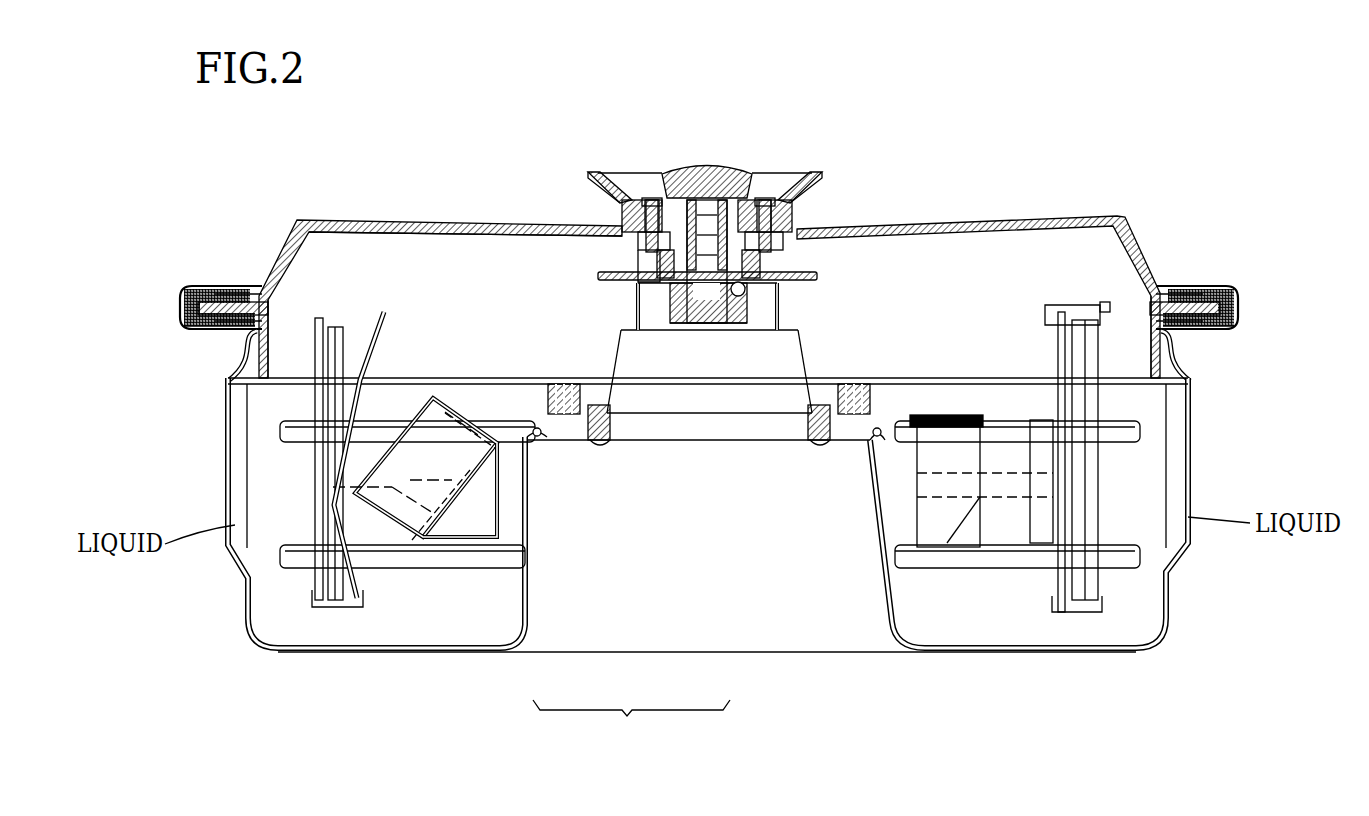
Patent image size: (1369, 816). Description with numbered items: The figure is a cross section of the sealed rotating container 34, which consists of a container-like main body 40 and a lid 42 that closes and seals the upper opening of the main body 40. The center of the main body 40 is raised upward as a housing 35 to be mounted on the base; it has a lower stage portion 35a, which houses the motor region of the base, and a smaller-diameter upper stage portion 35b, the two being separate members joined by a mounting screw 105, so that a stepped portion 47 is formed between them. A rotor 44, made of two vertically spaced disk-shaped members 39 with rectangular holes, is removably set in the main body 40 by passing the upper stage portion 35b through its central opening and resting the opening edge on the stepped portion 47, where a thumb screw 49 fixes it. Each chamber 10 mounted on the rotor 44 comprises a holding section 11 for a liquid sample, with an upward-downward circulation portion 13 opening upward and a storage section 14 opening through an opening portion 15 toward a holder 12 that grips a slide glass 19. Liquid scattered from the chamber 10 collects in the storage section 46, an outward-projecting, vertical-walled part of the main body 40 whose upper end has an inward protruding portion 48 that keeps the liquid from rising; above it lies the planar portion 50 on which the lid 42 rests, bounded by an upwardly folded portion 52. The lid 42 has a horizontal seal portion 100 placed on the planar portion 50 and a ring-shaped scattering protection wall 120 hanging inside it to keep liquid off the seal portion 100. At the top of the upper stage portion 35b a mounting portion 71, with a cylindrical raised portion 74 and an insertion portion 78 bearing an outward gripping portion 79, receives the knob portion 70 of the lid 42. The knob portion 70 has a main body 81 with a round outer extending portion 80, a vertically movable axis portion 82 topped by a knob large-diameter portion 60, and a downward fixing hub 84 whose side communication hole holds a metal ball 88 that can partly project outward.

The chamber 10 is at (392, 362).
The holding section 11 is at (445, 400).
The holder 12 is at (1077, 580).
The upward-downward circulation portion 13 is at (447, 467).
The storage section 14 is at (398, 520).
The opening portion 15 is at (345, 510).
The slide glass 19 is at (327, 592).
The sealed rotating container 34 is at (968, 172).
The housing 35 is at (631, 731).
The lower stage portion 35a is at (520, 537).
The upper stage portion 35b is at (623, 350).
The disk-shaped member 39 is at (278, 430).
The main body 40 is at (1163, 633).
The lid 42 is at (1092, 217).
The rotor 44 is at (545, 380).
The storage section 46 is at (228, 490).
The stepped portion 47 is at (540, 440).
The protruding portion 48 is at (247, 350).
The thumb screw 49 is at (570, 385).
The planar portion 50 is at (192, 329).
The folded portion 52 is at (182, 300).
The knob large-diameter portion 60 is at (704, 172).
The knob portion 70 is at (648, 165).
The mounting portion 71 is at (602, 248).
The cylindrical raised portion 74 is at (778, 304).
The insertion portion 78 is at (645, 303).
The gripping portion 79 is at (806, 276).
The outer extending portion 80 is at (818, 172).
The main body 81 is at (772, 210).
The axis portion 82 is at (707, 322).
The fixing hub 84 is at (676, 315).
The metal ball 88 is at (745, 310).
The seal portion 100 is at (195, 298).
The mounting screw 105 is at (604, 443).
The scattering protection wall 120 is at (262, 370).